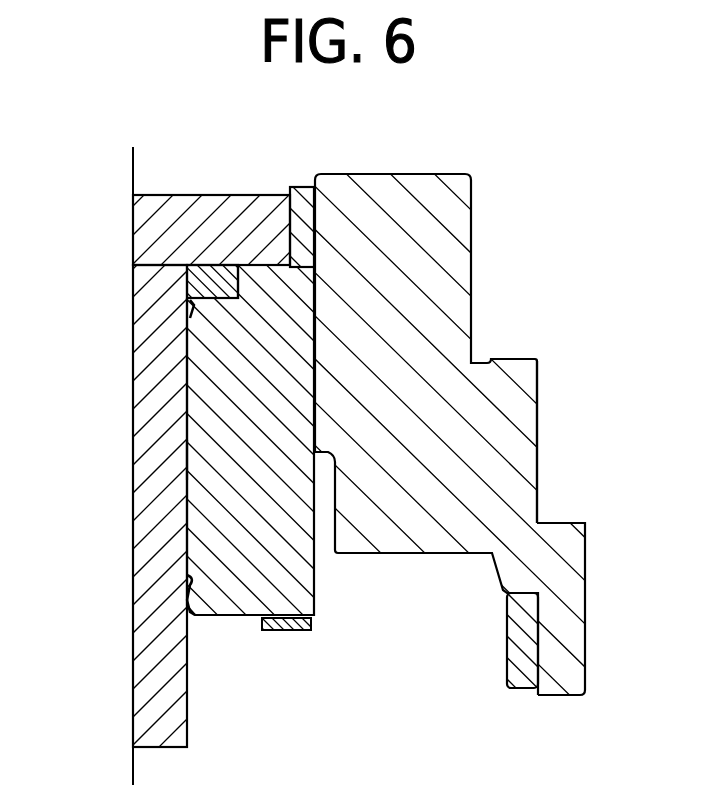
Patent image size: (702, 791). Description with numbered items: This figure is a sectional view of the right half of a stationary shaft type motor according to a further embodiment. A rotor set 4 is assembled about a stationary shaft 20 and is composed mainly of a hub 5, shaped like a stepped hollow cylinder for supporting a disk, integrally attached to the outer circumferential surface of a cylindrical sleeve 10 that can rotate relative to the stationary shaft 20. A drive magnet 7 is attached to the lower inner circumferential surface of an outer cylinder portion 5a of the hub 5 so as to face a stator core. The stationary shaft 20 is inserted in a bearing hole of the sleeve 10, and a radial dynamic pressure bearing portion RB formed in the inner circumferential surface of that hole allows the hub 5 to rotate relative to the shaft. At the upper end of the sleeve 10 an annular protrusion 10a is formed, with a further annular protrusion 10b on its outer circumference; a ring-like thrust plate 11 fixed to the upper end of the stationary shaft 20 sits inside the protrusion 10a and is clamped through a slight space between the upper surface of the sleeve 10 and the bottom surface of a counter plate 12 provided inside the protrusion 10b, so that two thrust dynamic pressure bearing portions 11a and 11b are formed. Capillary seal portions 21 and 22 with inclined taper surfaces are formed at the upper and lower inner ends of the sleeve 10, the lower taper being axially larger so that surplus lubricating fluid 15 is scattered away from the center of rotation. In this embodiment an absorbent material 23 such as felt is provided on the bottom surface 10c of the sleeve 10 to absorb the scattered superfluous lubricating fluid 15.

The rotor set 4 is at (498, 330).
The hub 5 is at (500, 462).
The outer cylinder portion 5a is at (583, 528).
The drive magnet 7 is at (512, 665).
The sleeve 10 is at (233, 417).
The annular protrusion 10a is at (267, 273).
The annular protrusion 10b is at (296, 212).
The bottom surface 10c is at (250, 618).
The thrust plate 11 is at (200, 268).
The thrust dynamic pressure bearing portion 11a is at (210, 283).
The thrust dynamic pressure bearing portion 11b is at (212, 300).
The counter plate 12 is at (223, 205).
The lubricating fluid 15 is at (193, 612).
The stationary shaft 20 is at (150, 553).
The capillary seal portion 21 is at (186, 305).
The capillary seal portion 22 is at (185, 578).
The absorbent material 23 is at (312, 626).
The radial dynamic pressure bearing portion RB is at (177, 458).